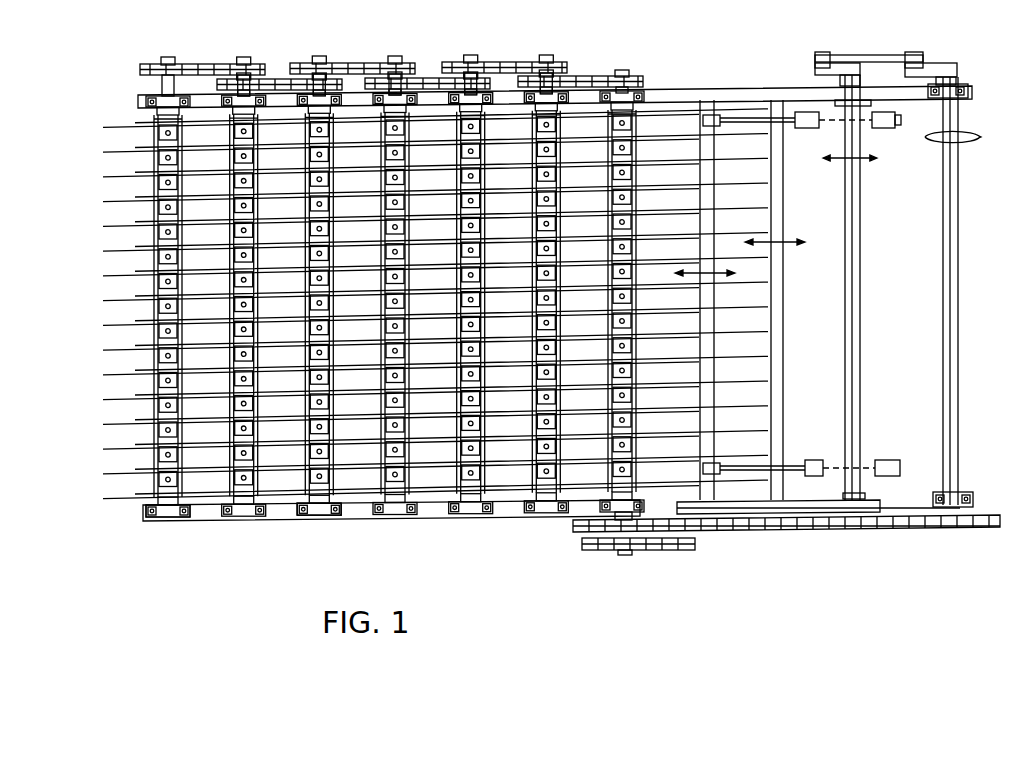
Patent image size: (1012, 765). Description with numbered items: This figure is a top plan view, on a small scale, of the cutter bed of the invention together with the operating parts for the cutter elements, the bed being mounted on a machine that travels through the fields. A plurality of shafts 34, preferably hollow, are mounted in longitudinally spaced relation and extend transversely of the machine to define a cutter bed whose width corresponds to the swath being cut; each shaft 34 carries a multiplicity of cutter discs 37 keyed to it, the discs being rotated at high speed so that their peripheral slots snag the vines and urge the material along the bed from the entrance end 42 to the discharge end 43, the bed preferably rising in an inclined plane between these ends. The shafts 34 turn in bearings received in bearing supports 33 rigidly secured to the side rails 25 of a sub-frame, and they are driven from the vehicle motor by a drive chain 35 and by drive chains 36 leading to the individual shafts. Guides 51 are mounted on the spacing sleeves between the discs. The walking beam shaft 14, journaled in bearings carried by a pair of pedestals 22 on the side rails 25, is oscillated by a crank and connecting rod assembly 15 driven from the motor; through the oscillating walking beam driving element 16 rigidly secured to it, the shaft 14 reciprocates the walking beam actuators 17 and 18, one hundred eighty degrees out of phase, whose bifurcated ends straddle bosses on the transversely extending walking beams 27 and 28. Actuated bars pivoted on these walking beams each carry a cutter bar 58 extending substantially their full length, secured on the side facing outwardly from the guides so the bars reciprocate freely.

The walking beam shaft 14 is at (862, 372).
The crank and connecting rod assembly 15 is at (878, 57).
The oscillating walking beam driving element 16 is at (878, 458).
The reciprocating walking beam actuator 17 is at (790, 126).
The reciprocating walking beam actuator 18 is at (829, 460).
The pedestal 22 is at (728, 93).
The side rail 25 is at (358, 518).
The walking beam 27 is at (775, 400).
The walking beam 28 is at (712, 418).
The bearing support 33 is at (176, 518).
The shaft 34 is at (326, 508).
The drive chain 35 is at (672, 550).
The drive chain 36 is at (212, 67).
The cutter disc 37 is at (150, 171).
The entrance end 42 is at (341, 304).
The discharge end 43 is at (961, 292).
The guide 51 is at (140, 133).
The cutter bar 58 is at (112, 199).